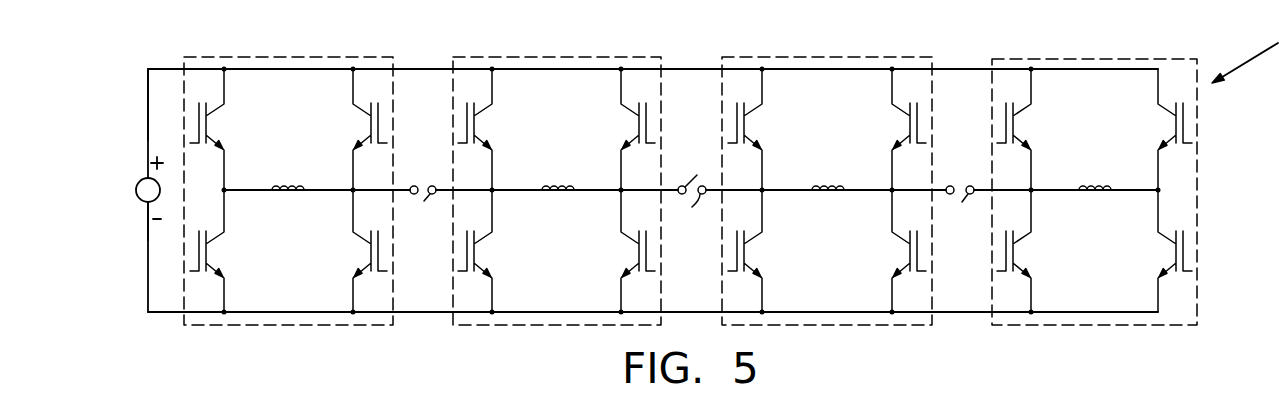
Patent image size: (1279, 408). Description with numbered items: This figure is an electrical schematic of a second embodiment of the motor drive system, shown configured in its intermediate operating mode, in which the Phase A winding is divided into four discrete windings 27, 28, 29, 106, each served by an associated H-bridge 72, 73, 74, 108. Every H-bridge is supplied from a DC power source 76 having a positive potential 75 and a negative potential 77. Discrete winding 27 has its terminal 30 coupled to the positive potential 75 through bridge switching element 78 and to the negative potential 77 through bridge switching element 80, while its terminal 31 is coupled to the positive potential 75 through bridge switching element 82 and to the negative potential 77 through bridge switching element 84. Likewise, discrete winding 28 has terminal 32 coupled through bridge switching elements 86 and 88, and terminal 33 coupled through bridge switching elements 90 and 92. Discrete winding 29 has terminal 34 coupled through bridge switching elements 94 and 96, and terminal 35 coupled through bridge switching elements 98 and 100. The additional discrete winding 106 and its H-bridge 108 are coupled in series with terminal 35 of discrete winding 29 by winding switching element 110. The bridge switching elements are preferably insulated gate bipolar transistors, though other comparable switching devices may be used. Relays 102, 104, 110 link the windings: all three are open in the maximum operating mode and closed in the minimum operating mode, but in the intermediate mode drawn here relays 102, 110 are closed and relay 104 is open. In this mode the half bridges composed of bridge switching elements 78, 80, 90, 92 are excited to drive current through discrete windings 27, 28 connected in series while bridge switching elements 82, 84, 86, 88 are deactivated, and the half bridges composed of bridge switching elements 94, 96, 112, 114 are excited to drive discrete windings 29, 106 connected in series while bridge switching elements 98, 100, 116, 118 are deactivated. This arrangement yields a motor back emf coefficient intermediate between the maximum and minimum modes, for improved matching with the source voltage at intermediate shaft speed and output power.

The discrete winding 27 is at (288, 186).
The discrete winding 28 is at (550, 186).
The discrete winding 29 is at (819, 188).
The terminal 30 is at (245, 191).
The terminal 31 is at (326, 191).
The terminal 32 is at (510, 191).
The terminal 33 is at (604, 191).
The terminal 34 is at (786, 191).
The terminal 35 is at (867, 192).
The H-bridge 72 is at (322, 56).
The H-bridge 73 is at (598, 56).
The H-bridge 74 is at (853, 57).
The positive potential 75 is at (146, 129).
The DC power source 76 is at (139, 199).
The negative potential 77 is at (145, 279).
The bridge switching element 78 is at (206, 128).
The bridge switching element 80 is at (206, 256).
The bridge switching element 82 is at (370, 128).
The bridge switching element 84 is at (370, 256).
The bridge switching element 86 is at (474, 128).
The bridge switching element 88 is at (474, 256).
The bridge switching element 90 is at (638, 128).
The bridge switching element 92 is at (638, 256).
The bridge switching element 94 is at (744, 128).
The bridge switching element 96 is at (744, 256).
The bridge switching element 98 is at (909, 128).
The bridge switching element 100 is at (909, 256).
The relay 102 is at (419, 209).
The relay 104 is at (689, 206).
The discrete winding 106 is at (1091, 183).
The H-bridge 108 is at (1123, 59).
The winding switching element 110 is at (959, 209).
The bridge switching element 112 is at (1175, 128).
The bridge switching element 114 is at (1175, 256).
The bridge switching element 116 is at (1013, 128).
The bridge switching element 118 is at (1013, 256).